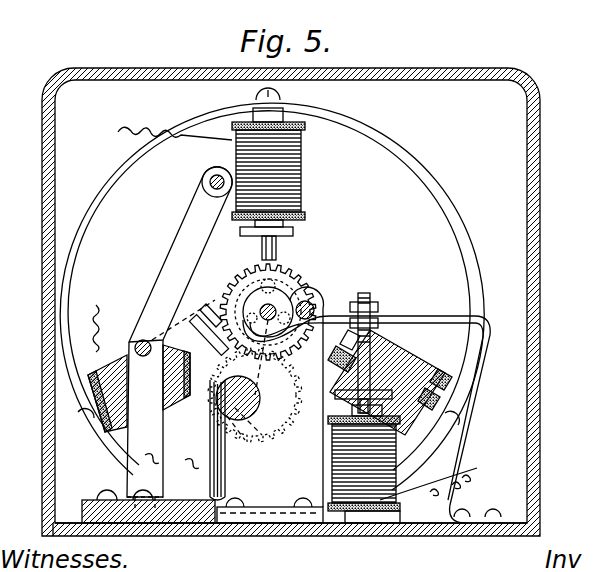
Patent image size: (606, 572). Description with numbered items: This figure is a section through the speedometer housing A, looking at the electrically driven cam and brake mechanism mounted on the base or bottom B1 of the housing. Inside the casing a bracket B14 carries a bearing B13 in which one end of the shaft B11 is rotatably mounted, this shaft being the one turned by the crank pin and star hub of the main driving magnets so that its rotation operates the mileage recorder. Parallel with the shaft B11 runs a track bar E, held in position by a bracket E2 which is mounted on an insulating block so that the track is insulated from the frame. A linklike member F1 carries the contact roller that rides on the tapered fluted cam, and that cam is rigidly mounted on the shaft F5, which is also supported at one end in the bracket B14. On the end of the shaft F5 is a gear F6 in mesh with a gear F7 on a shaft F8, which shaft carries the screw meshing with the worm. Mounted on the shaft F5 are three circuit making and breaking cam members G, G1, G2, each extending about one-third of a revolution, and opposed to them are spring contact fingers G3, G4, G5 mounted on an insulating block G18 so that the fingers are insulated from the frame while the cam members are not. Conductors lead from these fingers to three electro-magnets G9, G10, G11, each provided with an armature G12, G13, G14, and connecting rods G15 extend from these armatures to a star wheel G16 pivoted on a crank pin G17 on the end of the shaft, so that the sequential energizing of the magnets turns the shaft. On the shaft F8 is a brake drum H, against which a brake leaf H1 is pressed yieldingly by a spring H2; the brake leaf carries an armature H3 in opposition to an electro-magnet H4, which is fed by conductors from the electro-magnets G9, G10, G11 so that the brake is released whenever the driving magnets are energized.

The housing A is at (540, 106).
The base B1 is at (335, 533).
The shaft B11 is at (318, 297).
The bearing B13 is at (285, 300).
The bracket B14 is at (280, 499).
The track bar E is at (209, 181).
The bracket E2 is at (190, 208).
The linklike member F1 is at (142, 340).
The shaft F5 is at (240, 423).
The gear F6 is at (182, 405).
The gear F7 is at (232, 290).
The shaft F8 is at (268, 322).
The circuit making and breaking cam member G is at (262, 408).
The circuit making and breaking cam member G1 is at (200, 335).
The circuit making and breaking cam member G2 is at (255, 425).
The spring contact finger G3 is at (212, 478).
The spring contact finger G4 is at (222, 472).
The spring contact finger G5 is at (224, 495).
The electro-magnet G9 is at (108, 368).
The electro-magnet G10 is at (300, 162).
The electro-magnet G11 is at (400, 357).
The armature G12 is at (205, 318).
The armature G13 is at (293, 233).
The armature G14 is at (343, 330).
The connecting rod G15 is at (277, 257).
The star wheel G16 is at (248, 272).
The crank pin G17 is at (291, 293).
The insulating block G18 is at (86, 500).
The brake drum H is at (304, 300).
The brake leaf H1 is at (296, 318).
The spring H2 is at (485, 326).
The armature H3 is at (397, 370).
The electro-magnet H4 is at (440, 475).